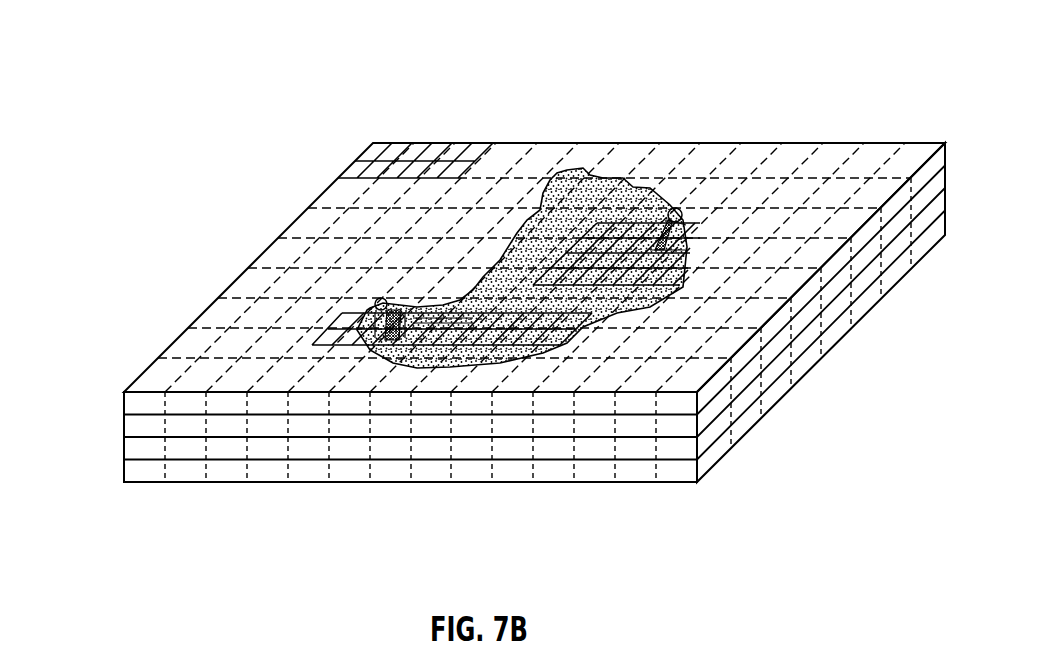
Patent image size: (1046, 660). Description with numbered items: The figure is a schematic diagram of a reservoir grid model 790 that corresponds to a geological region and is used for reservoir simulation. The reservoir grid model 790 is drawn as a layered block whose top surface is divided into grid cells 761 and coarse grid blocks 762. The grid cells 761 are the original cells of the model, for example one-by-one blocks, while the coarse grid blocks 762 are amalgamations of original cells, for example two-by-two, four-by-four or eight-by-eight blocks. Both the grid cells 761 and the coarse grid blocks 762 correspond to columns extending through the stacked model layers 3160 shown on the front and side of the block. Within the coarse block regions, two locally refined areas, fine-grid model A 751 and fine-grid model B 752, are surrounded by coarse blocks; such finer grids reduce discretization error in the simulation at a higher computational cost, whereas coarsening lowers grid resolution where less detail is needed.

The reservoir grid model 790 is at (224, 106).
The grid cells 761 is at (353, 162).
The coarse grid blocks 762 is at (500, 150).
The fine-grid model B 752 is at (706, 230).
The fine-grid model A 751 is at (340, 313).
The model layers 3160 is at (112, 392).